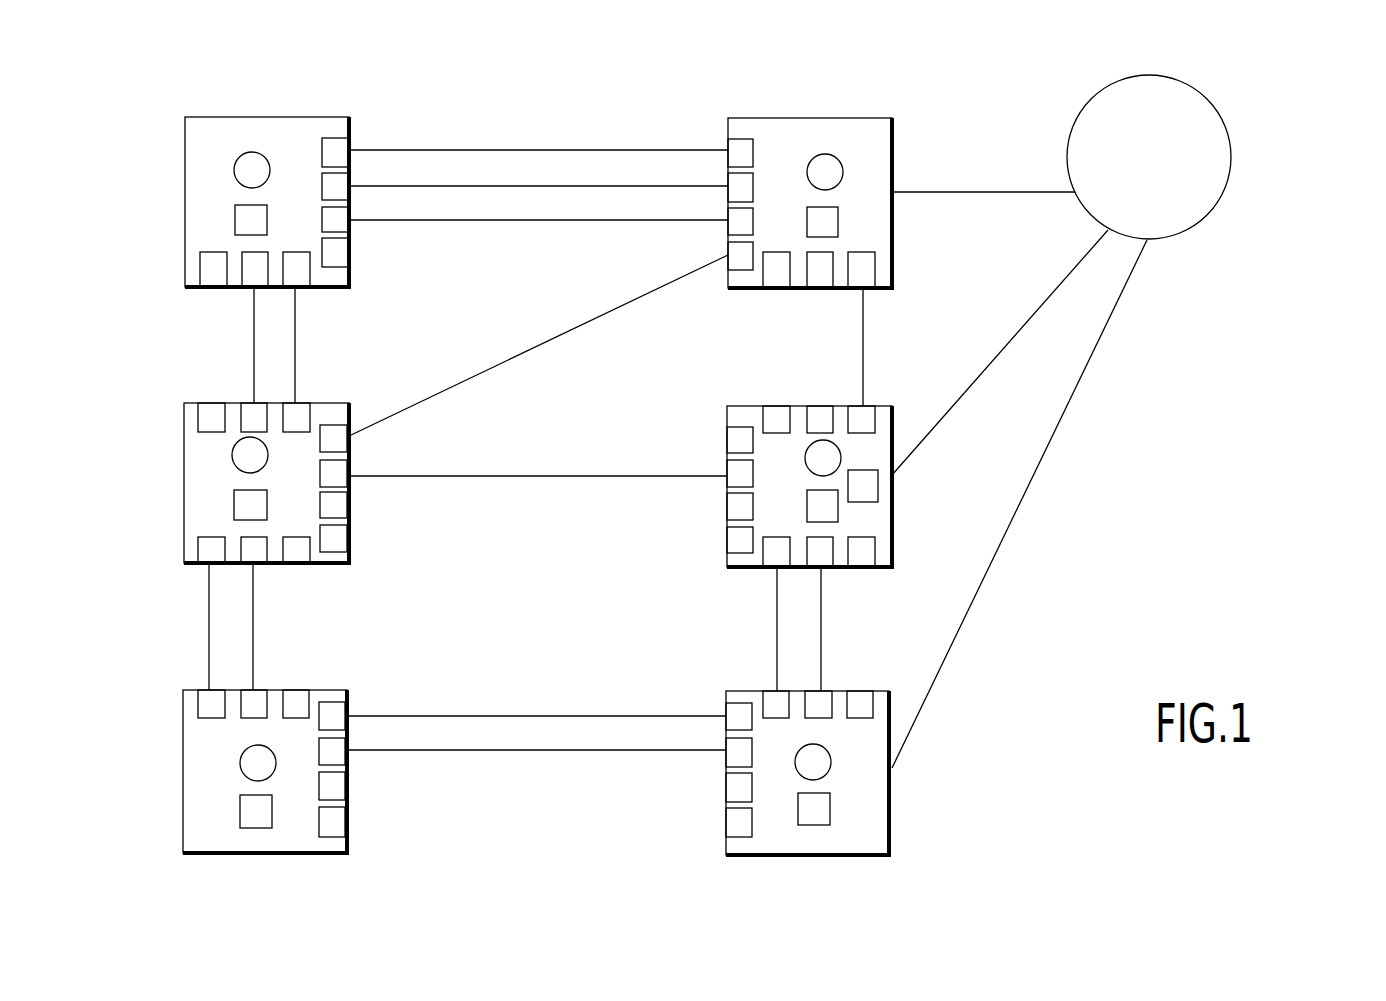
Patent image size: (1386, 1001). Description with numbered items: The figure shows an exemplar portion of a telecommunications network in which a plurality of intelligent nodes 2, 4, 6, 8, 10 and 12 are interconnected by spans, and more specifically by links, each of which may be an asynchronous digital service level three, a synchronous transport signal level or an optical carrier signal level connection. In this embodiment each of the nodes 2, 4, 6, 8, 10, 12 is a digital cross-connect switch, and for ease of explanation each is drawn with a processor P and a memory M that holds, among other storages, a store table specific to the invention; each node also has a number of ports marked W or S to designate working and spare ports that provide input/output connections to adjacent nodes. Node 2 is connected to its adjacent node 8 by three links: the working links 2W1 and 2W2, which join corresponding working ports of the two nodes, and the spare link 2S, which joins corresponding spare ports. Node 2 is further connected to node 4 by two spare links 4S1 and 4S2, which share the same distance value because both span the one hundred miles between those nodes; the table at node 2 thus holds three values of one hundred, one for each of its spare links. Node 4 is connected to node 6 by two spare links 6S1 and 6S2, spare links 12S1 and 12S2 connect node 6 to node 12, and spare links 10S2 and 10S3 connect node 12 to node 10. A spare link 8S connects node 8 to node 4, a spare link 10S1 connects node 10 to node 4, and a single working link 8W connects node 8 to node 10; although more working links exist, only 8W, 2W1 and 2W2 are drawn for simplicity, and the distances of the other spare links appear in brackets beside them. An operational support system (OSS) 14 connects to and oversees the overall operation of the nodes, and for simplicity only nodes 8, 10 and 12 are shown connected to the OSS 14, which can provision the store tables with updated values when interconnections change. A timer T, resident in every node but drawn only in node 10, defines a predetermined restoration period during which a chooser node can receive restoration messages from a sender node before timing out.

The intelligent node 2 is at (185, 182).
The intelligent node 4 is at (184, 490).
The intelligent node 6 is at (183, 772).
The intelligent node 8 is at (793, 118).
The intelligent node 10 is at (765, 406).
The intelligent node 12 is at (805, 855).
The operational support system (OSS) 14 is at (1202, 220).
The working link 2W1 is at (423, 150).
The working link 2W2 is at (590, 186).
The spare link 2S is at (490, 222).
The spare link 4S1 is at (253, 322).
The spare link 4S2 is at (296, 322).
The spare link 6S1 is at (210, 630).
The spare link 6S2 is at (253, 630).
The spare link 8S is at (547, 342).
The working link 8W is at (863, 325).
The spare link 10S1 is at (500, 477).
The spare link 10S2 is at (777, 590).
The spare link 10S3 is at (821, 590).
The spare link 12S1 is at (500, 714).
The spare link 12S2 is at (545, 750).